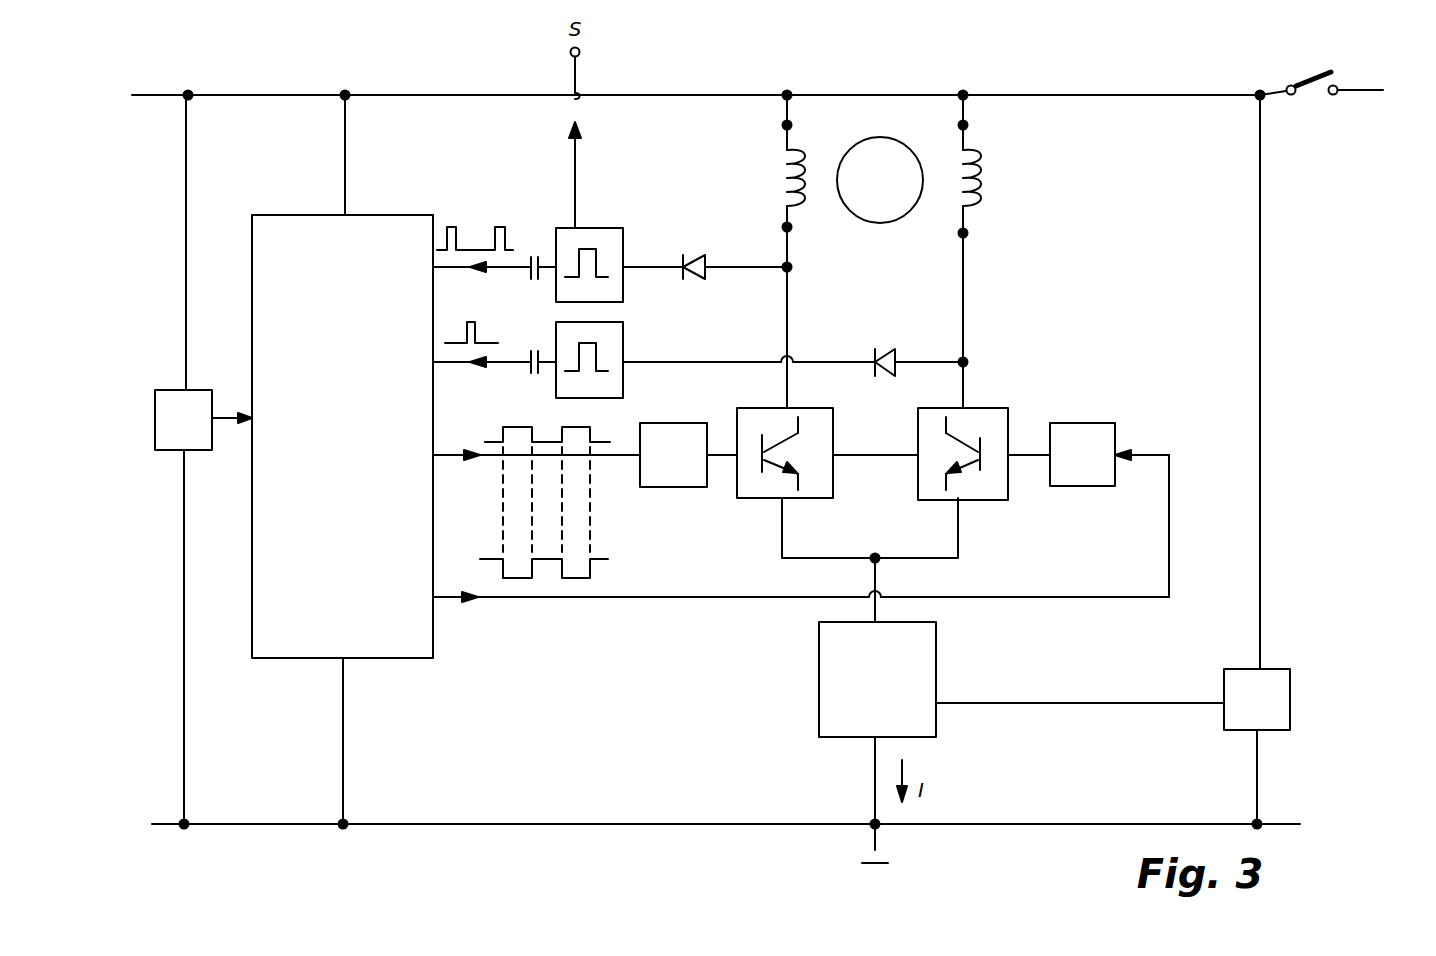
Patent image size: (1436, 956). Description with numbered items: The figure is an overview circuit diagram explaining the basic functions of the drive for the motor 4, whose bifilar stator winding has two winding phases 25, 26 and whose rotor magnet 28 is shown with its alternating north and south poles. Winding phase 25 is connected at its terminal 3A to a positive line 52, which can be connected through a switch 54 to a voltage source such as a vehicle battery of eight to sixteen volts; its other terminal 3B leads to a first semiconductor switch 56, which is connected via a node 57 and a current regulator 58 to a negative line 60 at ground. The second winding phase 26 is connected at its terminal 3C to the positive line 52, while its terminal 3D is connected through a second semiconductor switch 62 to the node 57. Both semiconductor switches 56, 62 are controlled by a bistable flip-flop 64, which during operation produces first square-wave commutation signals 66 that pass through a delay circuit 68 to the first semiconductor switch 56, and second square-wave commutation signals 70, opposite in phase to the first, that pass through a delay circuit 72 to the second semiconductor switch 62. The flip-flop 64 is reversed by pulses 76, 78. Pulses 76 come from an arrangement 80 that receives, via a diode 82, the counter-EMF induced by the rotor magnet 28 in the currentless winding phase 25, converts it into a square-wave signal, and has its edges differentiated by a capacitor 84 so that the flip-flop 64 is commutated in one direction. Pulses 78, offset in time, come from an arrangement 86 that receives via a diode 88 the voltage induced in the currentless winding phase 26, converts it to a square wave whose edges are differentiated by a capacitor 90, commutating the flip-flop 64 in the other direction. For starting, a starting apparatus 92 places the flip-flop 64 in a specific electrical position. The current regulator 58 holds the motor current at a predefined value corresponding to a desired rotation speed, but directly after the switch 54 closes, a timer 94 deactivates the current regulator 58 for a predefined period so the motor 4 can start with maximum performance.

The terminal 3A is at (793, 125).
The terminal 3B is at (792, 230).
The terminal 3C is at (969, 125).
The terminal 3D is at (969, 233).
The motor 4 is at (876, 251).
The winding phase 25 is at (781, 177).
The winding phase 26 is at (986, 182).
The rotor magnet 28 is at (898, 142).
The positive line 52 is at (712, 93).
The switch 54 is at (1309, 97).
The first semiconductor switch 56 is at (833, 428).
The node 57 is at (878, 555).
The current regulator 58 is at (936, 650).
The negative line 60 is at (1068, 822).
The second semiconductor switch 62 is at (990, 408).
The bistable flip-flop 64 is at (342, 459).
The first square-wave commutation signals 66 is at (505, 427).
The delay circuit 68 is at (690, 422).
The second square-wave commutation signals 70 is at (597, 560).
The delay circuit 72 is at (1098, 423).
The pulses 76 is at (458, 236).
The pulses 78 is at (470, 320).
The arrangement 80 is at (605, 227).
The diode 82 is at (694, 255).
The capacitor 84 is at (533, 250).
The arrangement 86 is at (623, 333).
The diode 88 is at (885, 348).
The capacitor 90 is at (535, 347).
The starting apparatus 92 is at (165, 390).
The timer 94 is at (1275, 669).